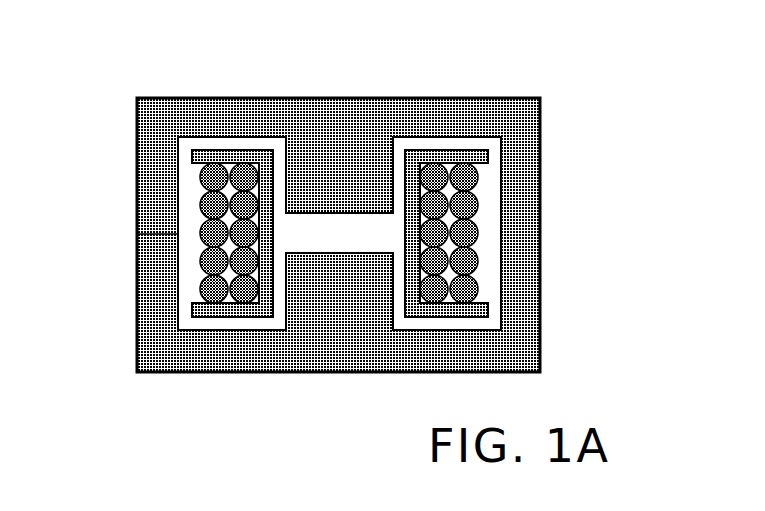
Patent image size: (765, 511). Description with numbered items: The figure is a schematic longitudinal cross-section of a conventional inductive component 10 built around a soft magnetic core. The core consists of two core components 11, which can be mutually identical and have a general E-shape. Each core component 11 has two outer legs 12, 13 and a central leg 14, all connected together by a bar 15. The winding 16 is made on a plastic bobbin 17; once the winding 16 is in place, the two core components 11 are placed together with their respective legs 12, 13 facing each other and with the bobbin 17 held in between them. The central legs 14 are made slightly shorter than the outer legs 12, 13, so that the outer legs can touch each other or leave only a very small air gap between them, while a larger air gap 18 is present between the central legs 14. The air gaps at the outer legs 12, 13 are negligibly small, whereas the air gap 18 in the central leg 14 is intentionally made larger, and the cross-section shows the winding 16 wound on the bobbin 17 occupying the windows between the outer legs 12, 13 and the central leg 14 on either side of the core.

The inductive component 10 is at (98, 59).
The core component 11 is at (220, 100).
The outer leg 12 is at (157, 267).
The outer leg 13 is at (524, 275).
The central leg 14 is at (338, 288).
The bar 15 is at (468, 113).
The winding 16 is at (466, 179).
The bobbin 17 is at (466, 313).
The air gap 18 is at (353, 233).